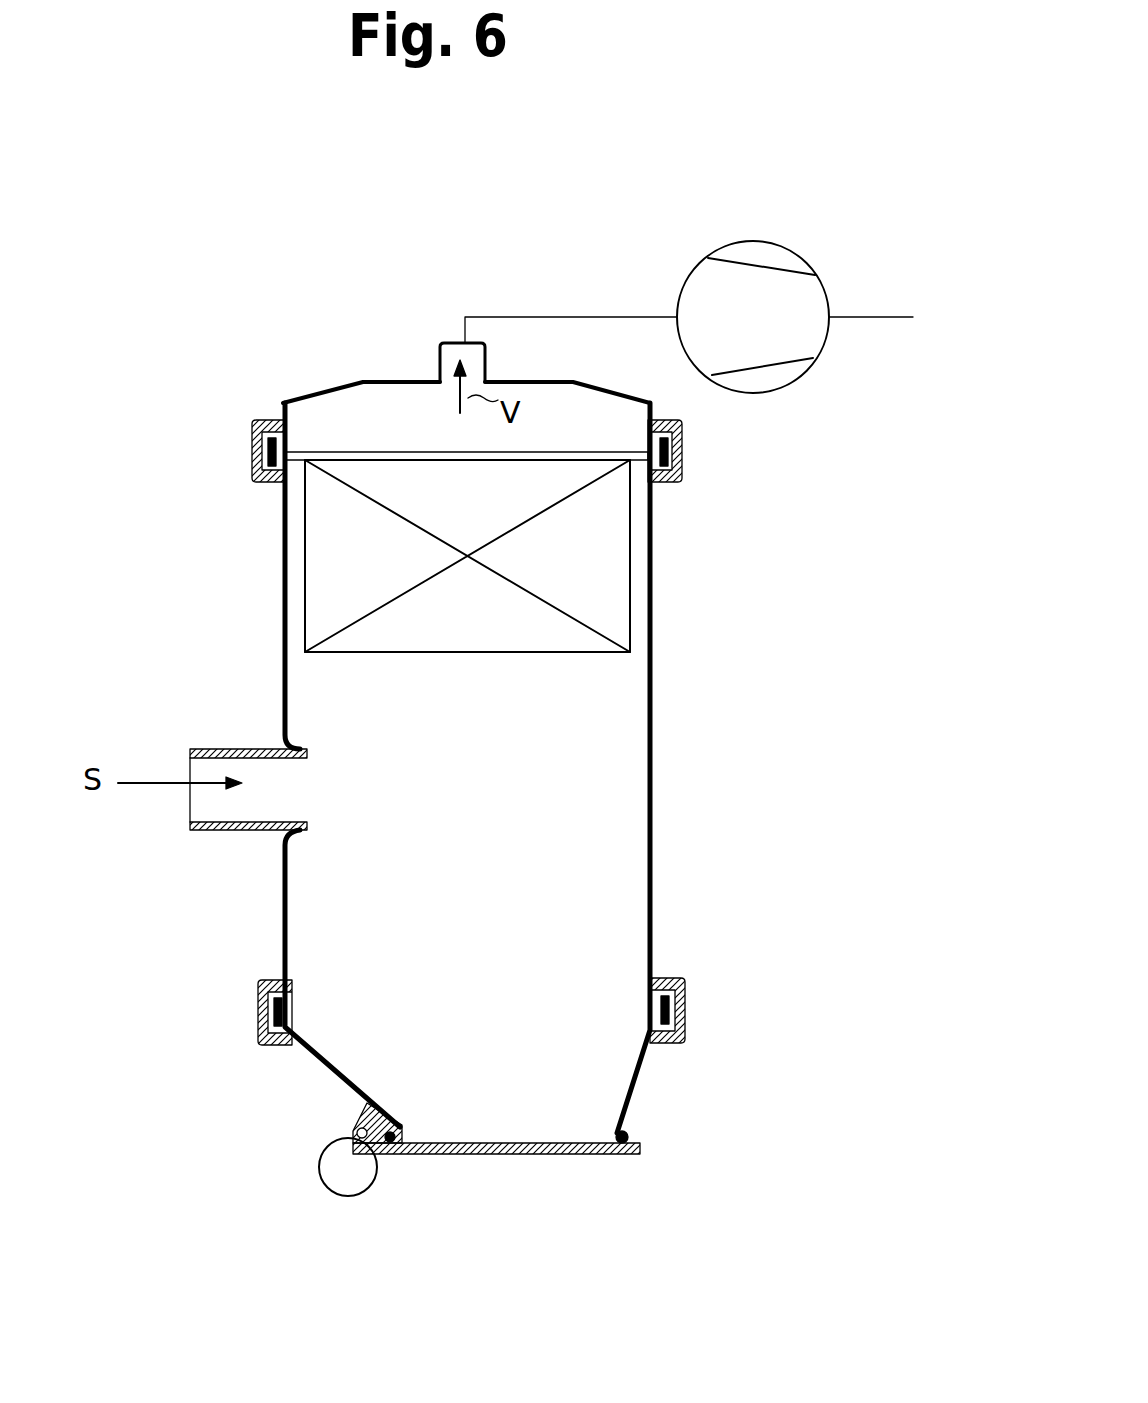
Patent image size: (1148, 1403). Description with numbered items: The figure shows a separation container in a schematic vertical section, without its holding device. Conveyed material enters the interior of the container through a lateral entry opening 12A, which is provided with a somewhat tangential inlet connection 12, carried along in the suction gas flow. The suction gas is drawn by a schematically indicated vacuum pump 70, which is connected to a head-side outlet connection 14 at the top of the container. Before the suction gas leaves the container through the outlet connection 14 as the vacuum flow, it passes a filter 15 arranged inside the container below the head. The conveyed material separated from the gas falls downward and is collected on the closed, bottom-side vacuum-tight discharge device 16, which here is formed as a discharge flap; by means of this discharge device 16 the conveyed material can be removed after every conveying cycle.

The inlet connection 12 is at (205, 749).
The lateral entry opening 12A is at (190, 807).
The head-side outlet connection 14 is at (440, 360).
The filter 15 is at (630, 572).
The discharge device 16 is at (560, 1153).
The vacuum pump 70 is at (815, 275).